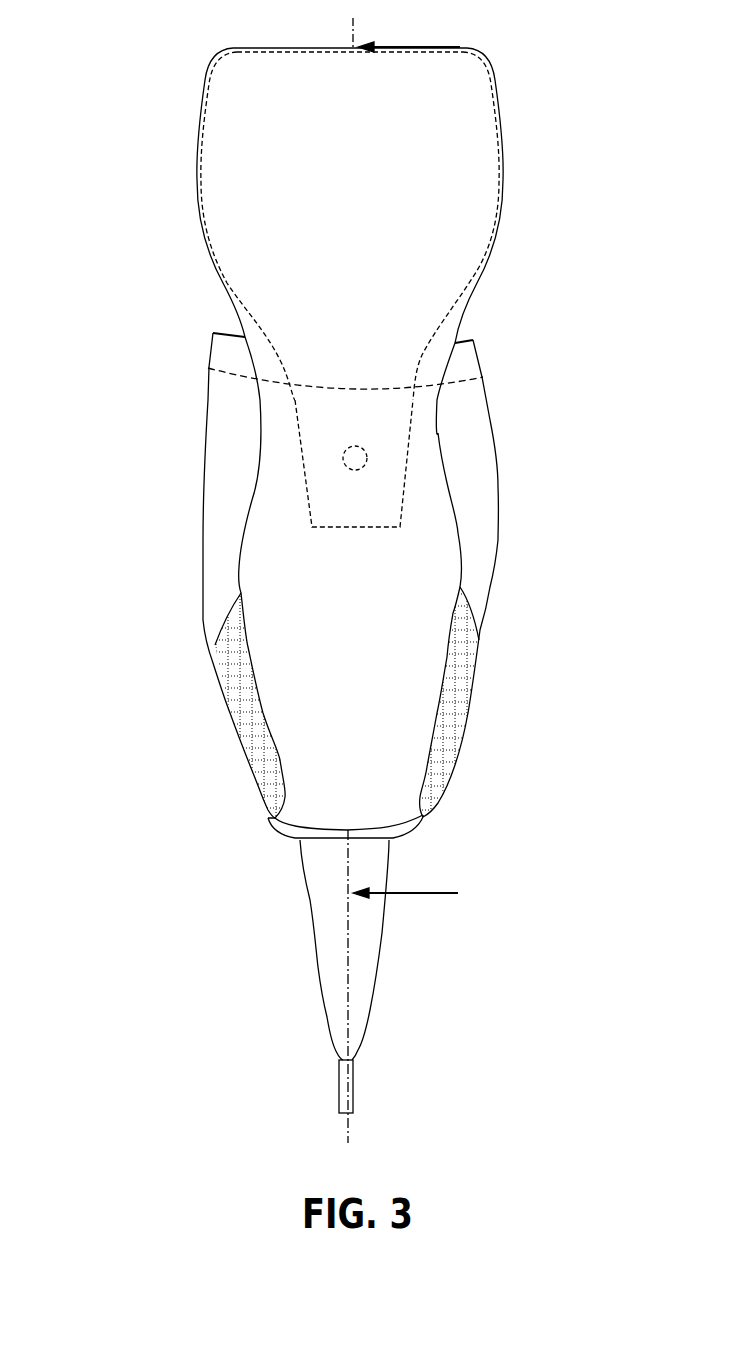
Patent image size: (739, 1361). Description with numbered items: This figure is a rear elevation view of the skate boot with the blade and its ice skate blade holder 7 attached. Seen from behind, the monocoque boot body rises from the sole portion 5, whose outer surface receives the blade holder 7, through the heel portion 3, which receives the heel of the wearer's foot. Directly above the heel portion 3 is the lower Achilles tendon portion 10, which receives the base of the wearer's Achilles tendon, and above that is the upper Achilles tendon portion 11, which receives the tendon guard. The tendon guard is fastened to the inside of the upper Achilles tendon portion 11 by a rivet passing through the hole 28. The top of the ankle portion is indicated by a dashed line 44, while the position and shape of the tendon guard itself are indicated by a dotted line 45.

The heel portion 3 is at (365, 688).
The sole portion 5 is at (406, 458).
The ice skate blade holder 7 is at (367, 1020).
The lower Achilles tendon portion 10 is at (360, 557).
The upper Achilles tendon portion 11 is at (355, 489).
The hole 28 is at (357, 457).
The dashed line 44 is at (245, 377).
The dotted line 45 is at (445, 328).